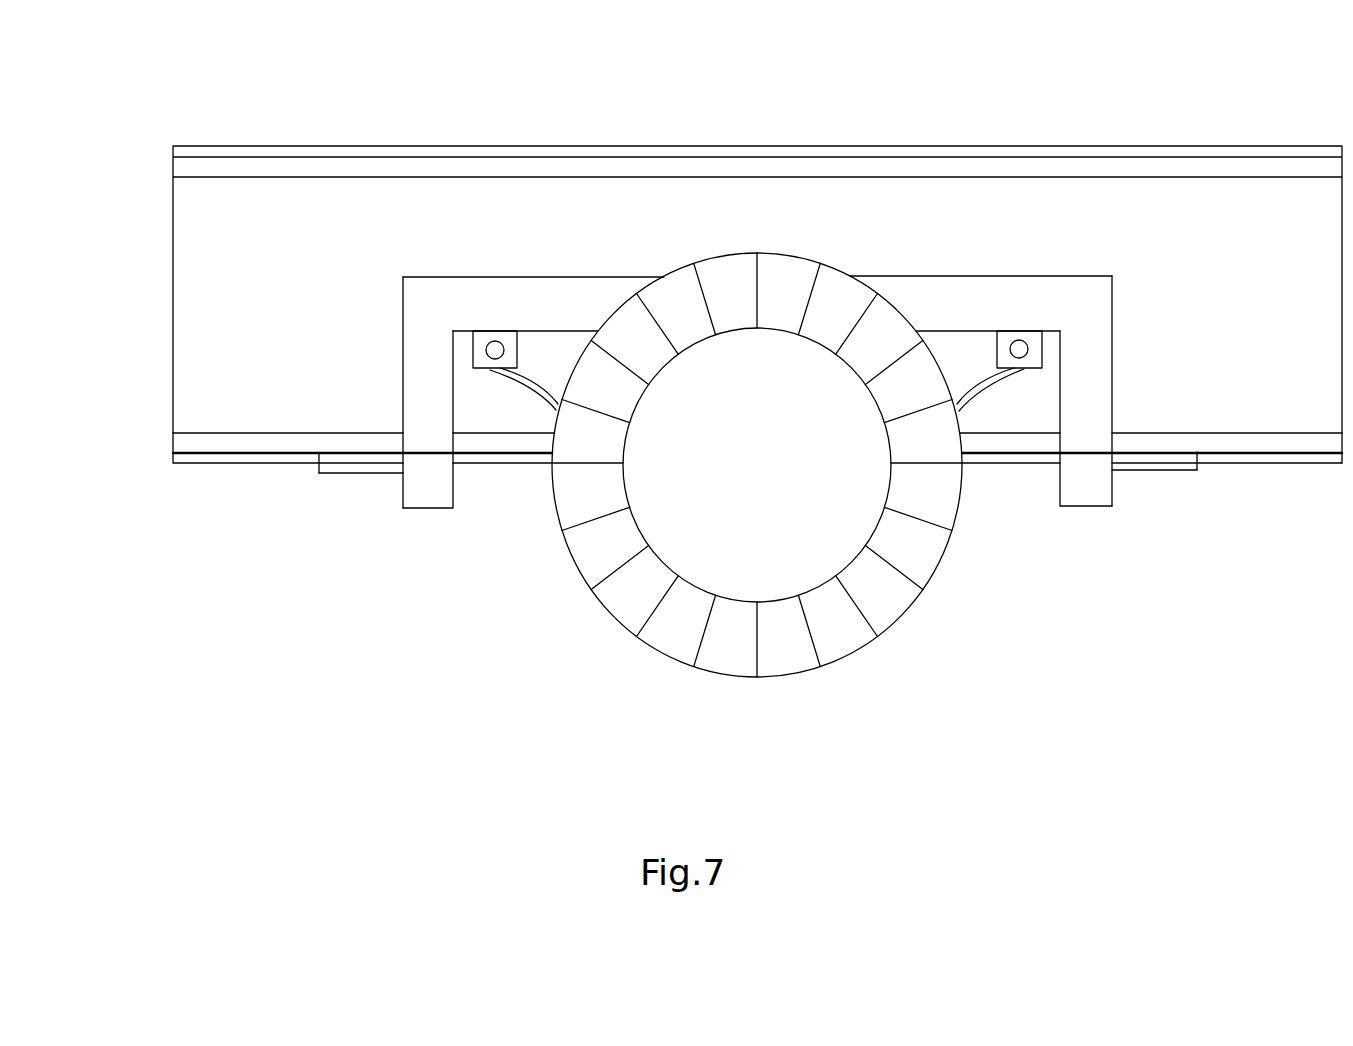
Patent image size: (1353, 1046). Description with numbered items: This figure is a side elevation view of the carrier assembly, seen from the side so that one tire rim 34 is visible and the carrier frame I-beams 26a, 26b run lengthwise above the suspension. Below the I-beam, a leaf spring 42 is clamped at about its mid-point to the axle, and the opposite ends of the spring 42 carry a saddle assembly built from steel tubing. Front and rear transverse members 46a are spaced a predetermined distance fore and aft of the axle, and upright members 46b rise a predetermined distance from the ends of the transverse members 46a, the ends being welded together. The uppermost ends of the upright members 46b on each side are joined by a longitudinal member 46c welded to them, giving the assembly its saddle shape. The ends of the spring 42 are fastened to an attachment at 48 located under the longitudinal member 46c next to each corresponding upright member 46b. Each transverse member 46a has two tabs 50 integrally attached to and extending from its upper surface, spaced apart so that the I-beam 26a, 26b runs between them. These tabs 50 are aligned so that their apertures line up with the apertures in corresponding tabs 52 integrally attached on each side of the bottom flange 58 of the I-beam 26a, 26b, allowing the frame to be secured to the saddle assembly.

The carrier frame I-beam 26a is at (757, 251).
The carrier frame I-beam 26b is at (920, 195).
The tire rim 34 is at (615, 605).
The spring 42 is at (533, 383).
The front and rear transverse member 46a is at (448, 498).
The upright member 46b is at (417, 410).
The longitudinal member 46c is at (448, 318).
The attachment 48 is at (488, 370).
The tab 50 is at (340, 468).
The tab 52 is at (333, 452).
The bottom flange 58 is at (183, 460).